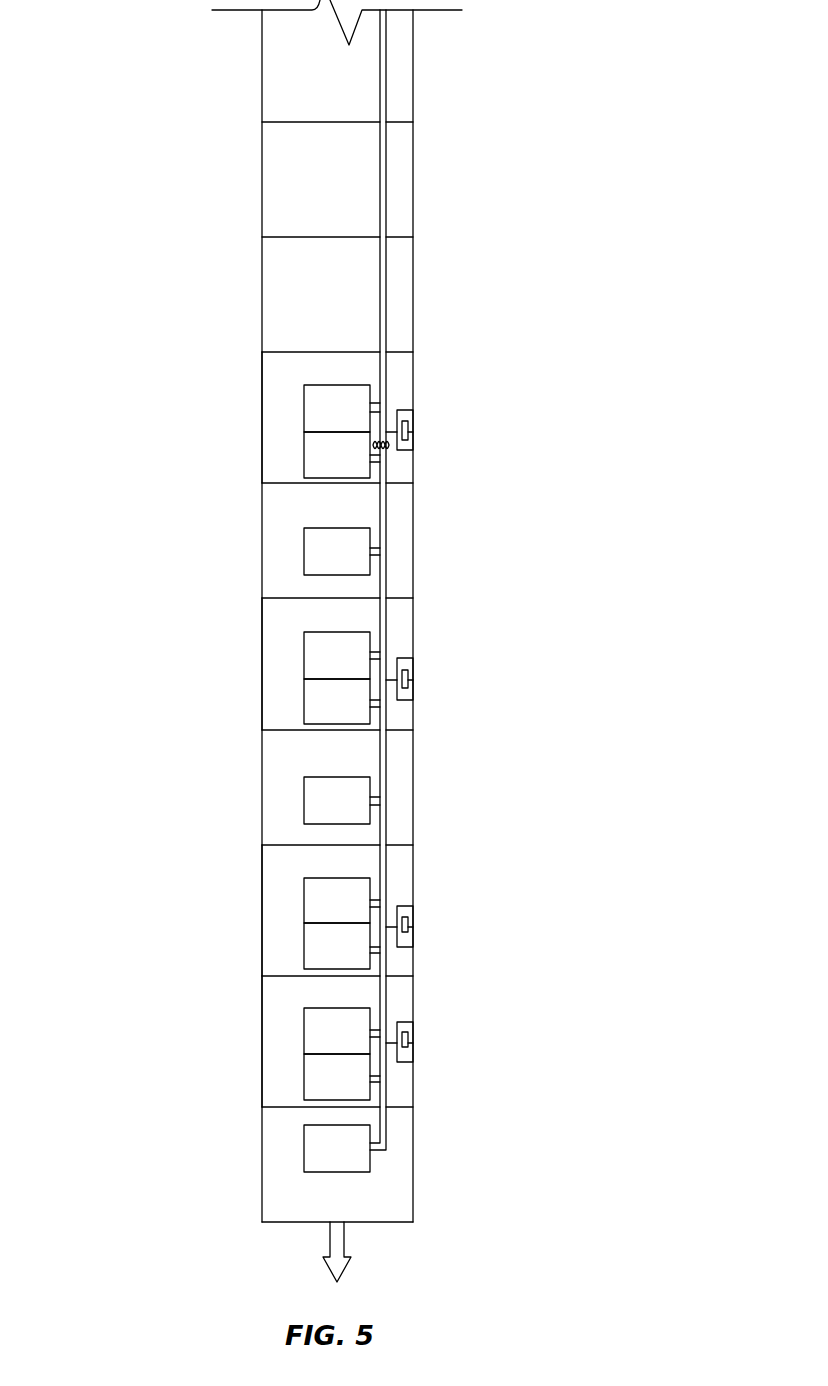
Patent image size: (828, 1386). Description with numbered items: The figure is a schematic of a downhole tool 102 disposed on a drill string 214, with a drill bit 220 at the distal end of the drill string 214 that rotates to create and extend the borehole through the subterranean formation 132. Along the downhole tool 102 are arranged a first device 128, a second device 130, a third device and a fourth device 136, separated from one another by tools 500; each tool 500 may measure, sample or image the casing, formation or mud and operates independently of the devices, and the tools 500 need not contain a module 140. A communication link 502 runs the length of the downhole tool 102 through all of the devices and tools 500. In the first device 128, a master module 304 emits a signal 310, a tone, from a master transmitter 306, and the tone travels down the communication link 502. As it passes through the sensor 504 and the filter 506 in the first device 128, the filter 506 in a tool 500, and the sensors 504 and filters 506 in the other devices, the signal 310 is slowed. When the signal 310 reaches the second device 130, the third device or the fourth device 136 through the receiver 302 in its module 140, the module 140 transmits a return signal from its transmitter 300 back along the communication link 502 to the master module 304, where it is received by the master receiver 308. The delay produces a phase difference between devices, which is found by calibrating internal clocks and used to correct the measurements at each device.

The downhole tool 102 is at (603, 412).
The first device 128 is at (270, 477).
The second device 130 is at (270, 723).
The subterranean formation 132 is at (270, 967).
The fourth device 136 is at (270, 1100).
The module 140 is at (423, 652).
The drill string 214 is at (272, 64).
The drill bit 220 is at (346, 1243).
The transmitter 300 is at (413, 676).
The receiver 302 is at (413, 685).
The master module 304 is at (423, 404).
The master transmitter 306 is at (413, 428).
The master receiver 308 is at (413, 436).
The signal 310 is at (388, 450).
The tool 500 is at (398, 70).
The communication link 502 is at (392, 512).
The sensor 504 is at (304, 1030).
The filter 506 is at (304, 1078).